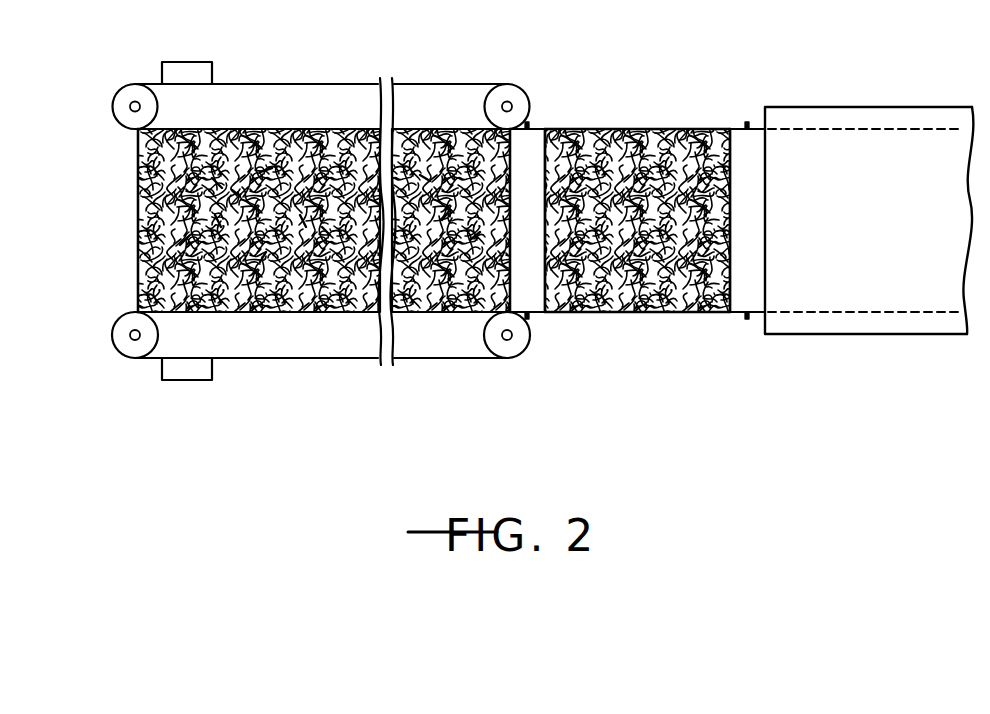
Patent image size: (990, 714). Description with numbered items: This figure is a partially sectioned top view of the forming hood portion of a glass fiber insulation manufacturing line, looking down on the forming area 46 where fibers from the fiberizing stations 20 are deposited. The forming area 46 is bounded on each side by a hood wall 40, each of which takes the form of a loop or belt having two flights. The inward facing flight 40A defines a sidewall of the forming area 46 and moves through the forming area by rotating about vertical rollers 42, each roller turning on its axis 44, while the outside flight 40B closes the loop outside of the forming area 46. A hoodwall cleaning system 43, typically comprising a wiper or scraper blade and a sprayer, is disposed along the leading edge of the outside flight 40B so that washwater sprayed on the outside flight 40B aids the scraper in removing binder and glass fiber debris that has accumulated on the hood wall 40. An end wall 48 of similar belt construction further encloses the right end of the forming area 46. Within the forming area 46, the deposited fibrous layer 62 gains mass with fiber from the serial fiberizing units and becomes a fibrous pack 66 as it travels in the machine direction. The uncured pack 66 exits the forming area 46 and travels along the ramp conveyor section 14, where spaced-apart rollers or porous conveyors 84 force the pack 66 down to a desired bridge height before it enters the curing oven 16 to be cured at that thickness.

The ramp conveyor section 14 is at (607, 322).
The curing oven 16 is at (830, 342).
The fiberizing stations 20 is at (220, 247).
The hood wall 40 is at (450, 216).
The inward facing flight 40A is at (280, 143).
The outside flight 40B is at (235, 84).
The roller 42 is at (515, 88).
The hoodwall cleaning system 43 is at (184, 70).
The axis 44 is at (135, 102).
The forming area 46 is at (345, 272).
The end wall 48 is at (531, 150).
The fibrous layer 62 is at (160, 208).
The fibrous pack 66 is at (625, 160).
The spaced-apart rollers or porous conveyors 84 is at (745, 148).